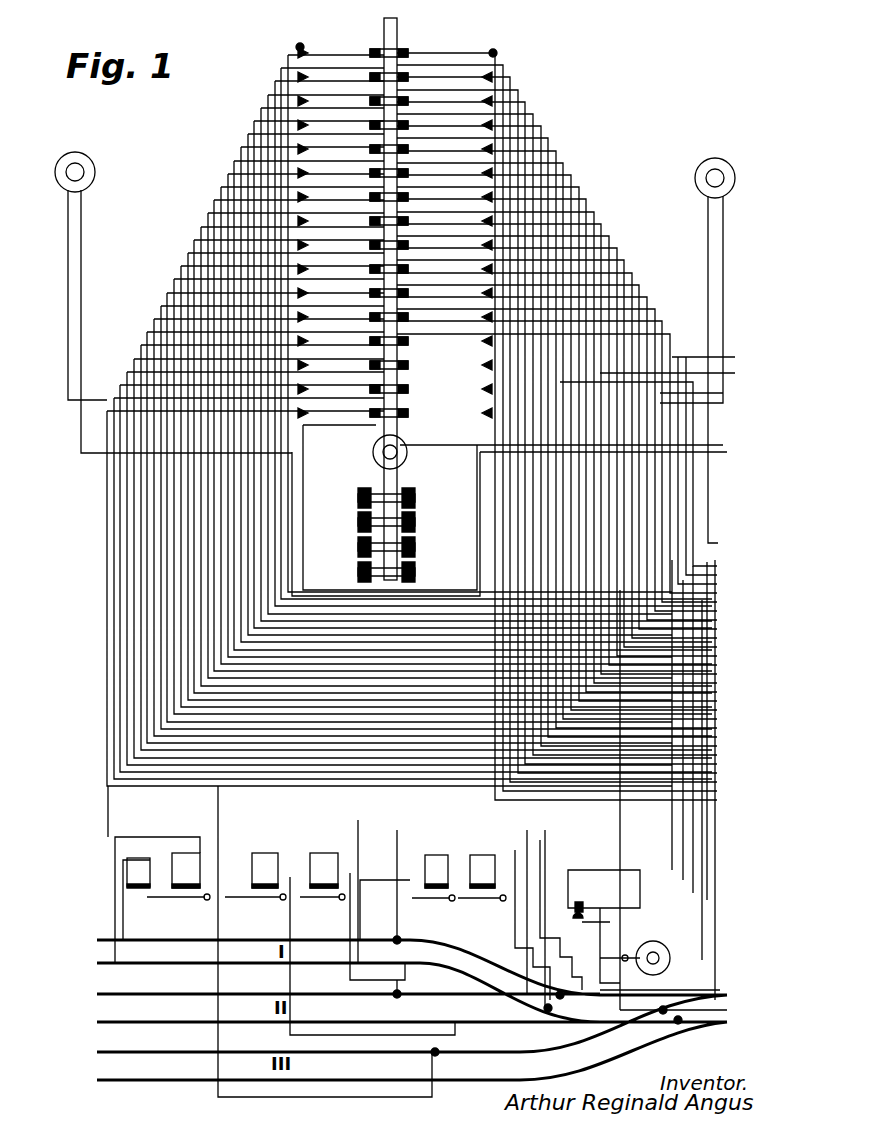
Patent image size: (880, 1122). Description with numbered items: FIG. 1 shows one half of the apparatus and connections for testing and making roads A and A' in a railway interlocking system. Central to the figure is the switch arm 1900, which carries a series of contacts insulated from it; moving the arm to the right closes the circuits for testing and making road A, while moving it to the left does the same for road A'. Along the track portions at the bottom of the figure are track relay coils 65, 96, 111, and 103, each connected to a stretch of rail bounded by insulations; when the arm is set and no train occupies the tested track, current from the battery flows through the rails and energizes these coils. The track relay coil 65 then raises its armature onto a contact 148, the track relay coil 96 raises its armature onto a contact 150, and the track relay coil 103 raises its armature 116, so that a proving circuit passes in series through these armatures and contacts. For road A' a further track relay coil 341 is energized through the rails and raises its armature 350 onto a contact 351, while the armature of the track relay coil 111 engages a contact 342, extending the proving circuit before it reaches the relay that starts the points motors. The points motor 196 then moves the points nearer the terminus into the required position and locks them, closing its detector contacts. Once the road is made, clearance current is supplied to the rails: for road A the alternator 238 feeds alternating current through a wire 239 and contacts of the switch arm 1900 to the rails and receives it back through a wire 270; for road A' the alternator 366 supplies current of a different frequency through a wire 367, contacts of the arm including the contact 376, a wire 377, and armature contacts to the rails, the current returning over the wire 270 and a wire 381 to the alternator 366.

The switch arm 1900 is at (400, 28).
The contact 376 is at (378, 441).
The wire 377 is at (303, 472).
The wire 381 is at (452, 586).
The alternator 366 is at (85, 160).
The wire 367 is at (68, 280).
The alternator 238 is at (719, 170).
The wire 239 is at (724, 258).
The wire 270 is at (718, 502).
The contact 351 is at (140, 872).
The track relay coil 341 is at (186, 870).
The track relay coil 111 is at (267, 870).
The track relay coil 103 is at (324, 870).
The track relay coil 96 is at (436, 871).
The track relay coil 65 is at (482, 871).
The armature 350 is at (178, 906).
The contact 342 is at (255, 906).
The armature 116 is at (322, 905).
The contact 150 is at (431, 907).
The contact 148 is at (482, 906).
The points motor 196 is at (635, 947).